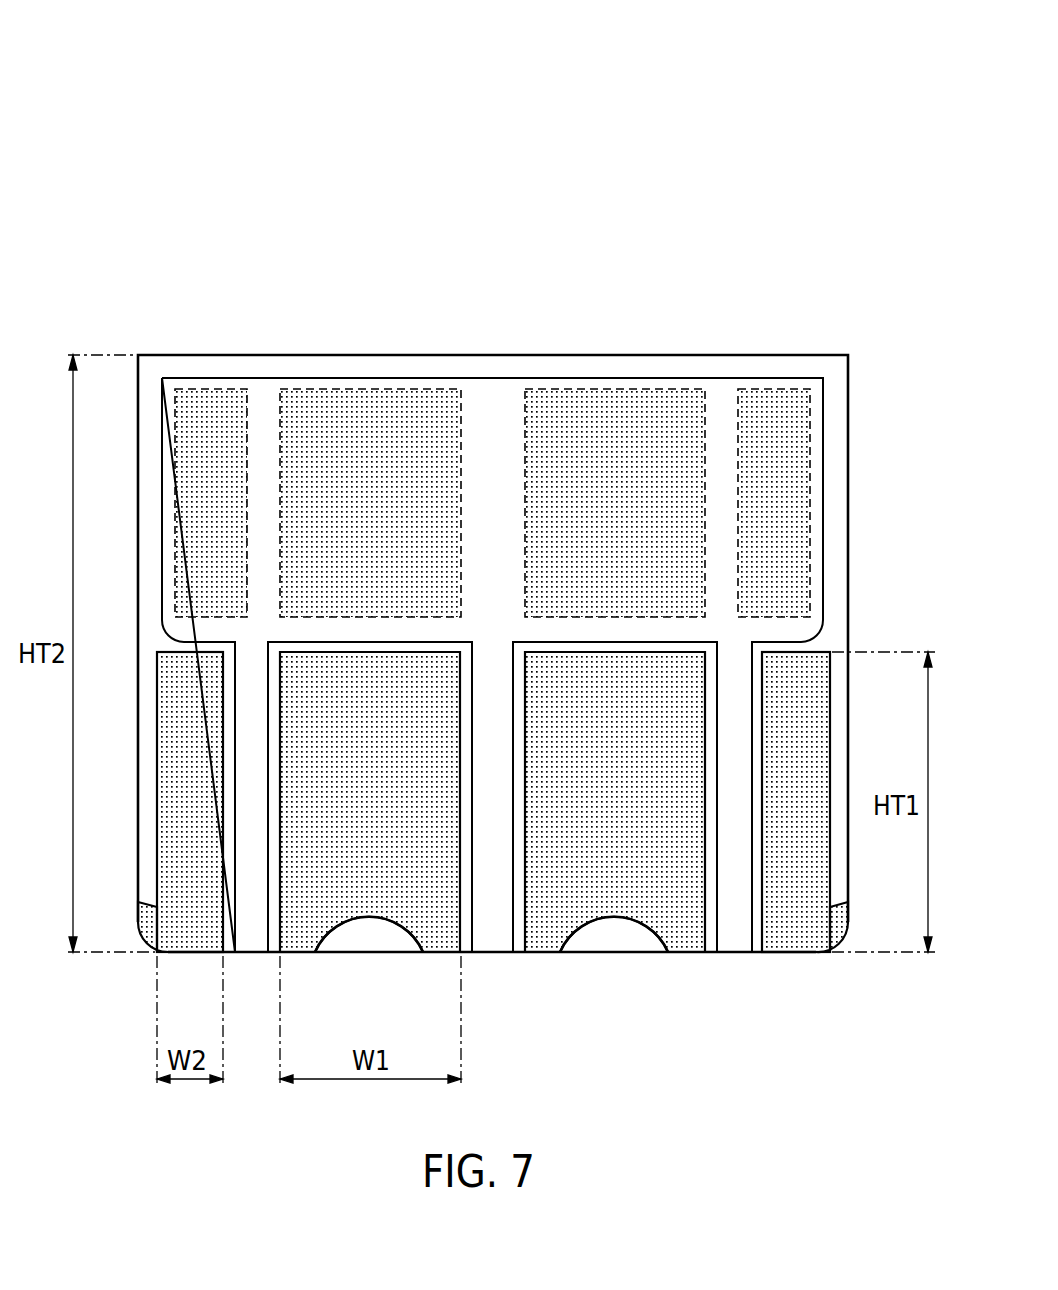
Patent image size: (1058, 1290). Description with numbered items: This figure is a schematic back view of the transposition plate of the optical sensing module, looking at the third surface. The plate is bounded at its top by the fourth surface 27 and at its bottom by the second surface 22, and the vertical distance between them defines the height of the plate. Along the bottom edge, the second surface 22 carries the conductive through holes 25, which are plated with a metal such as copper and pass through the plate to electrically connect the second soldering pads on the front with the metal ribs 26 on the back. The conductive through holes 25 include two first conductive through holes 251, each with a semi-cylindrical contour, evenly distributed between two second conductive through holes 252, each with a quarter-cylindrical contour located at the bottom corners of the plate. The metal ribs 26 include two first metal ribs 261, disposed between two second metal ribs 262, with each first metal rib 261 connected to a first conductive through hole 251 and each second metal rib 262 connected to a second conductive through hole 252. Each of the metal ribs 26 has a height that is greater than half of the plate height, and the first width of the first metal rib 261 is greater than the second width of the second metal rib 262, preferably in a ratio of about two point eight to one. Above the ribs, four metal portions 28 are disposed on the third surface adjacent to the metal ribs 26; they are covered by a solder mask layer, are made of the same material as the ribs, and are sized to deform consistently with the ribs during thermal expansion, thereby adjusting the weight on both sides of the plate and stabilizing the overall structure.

The second surface 22 is at (541, 953).
The conductive through holes 25 is at (883, 2).
The metal ribs 26 is at (883, 93).
The fourth surface 27 is at (496, 355).
The metal portion 28 is at (204, 389).
The first conductive through hole 251 is at (370, 921).
The second conductive through hole 252 is at (145, 940).
The first metal rib 261 is at (452, 933).
The second metal rib 262 is at (213, 927).